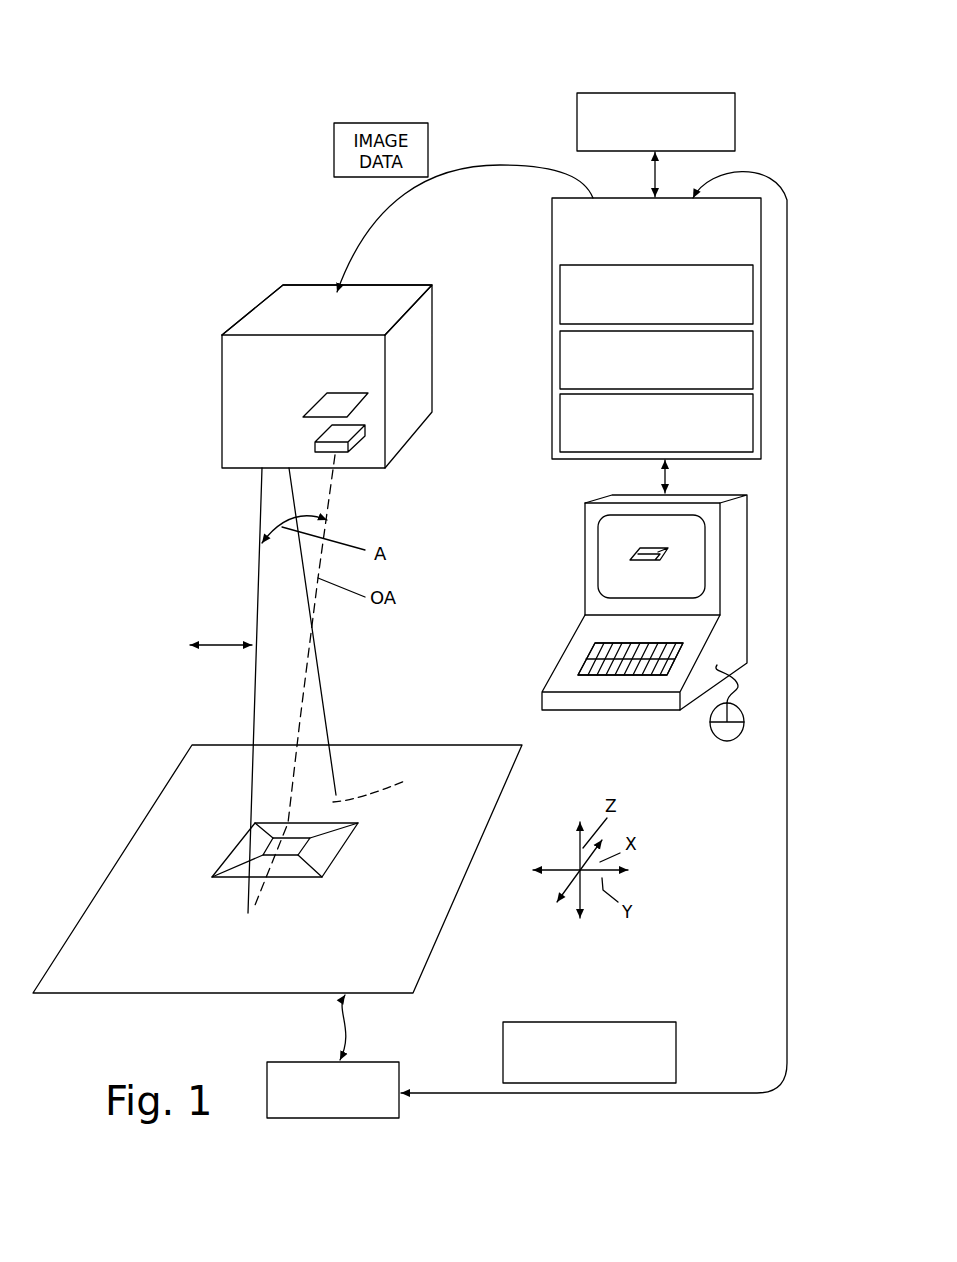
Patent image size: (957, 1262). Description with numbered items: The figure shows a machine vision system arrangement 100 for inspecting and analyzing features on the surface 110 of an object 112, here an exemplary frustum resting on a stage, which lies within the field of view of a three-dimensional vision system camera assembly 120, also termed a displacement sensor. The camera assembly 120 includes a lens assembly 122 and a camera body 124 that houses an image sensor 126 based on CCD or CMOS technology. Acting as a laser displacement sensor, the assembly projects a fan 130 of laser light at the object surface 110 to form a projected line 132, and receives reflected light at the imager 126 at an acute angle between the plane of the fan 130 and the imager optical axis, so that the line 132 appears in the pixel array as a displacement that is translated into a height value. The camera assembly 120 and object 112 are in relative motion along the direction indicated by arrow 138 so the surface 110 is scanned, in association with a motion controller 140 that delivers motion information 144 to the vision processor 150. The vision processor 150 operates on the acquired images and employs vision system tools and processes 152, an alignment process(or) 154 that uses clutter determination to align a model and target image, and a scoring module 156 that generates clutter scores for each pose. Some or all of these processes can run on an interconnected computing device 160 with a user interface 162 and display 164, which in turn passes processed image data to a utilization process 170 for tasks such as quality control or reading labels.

The machine vision system arrangement 100 is at (507, 79).
The object surface 110 is at (332, 855).
The object 112 is at (232, 850).
The 3D vision system camera assembly 120 is at (221, 376).
The lens assembly 122 is at (316, 444).
The camera body 124 is at (258, 328).
The image sensor 126 is at (310, 413).
The fan of laser light 130 is at (314, 628).
The projected line 132 is at (389, 783).
The motion direction arrow 138 is at (218, 650).
The motion controller 140 is at (330, 1119).
The motion information 144 is at (625, 1021).
The vision processor 150 is at (552, 245).
The vision system tools and processes 152 is at (560, 297).
The alignment process(or) 154 is at (560, 352).
The scoring module 156 is at (560, 420).
The computing device/processor 160 is at (620, 497).
The user interface 162 is at (710, 728).
The display 164 is at (603, 568).
The utilization process 170 is at (577, 105).